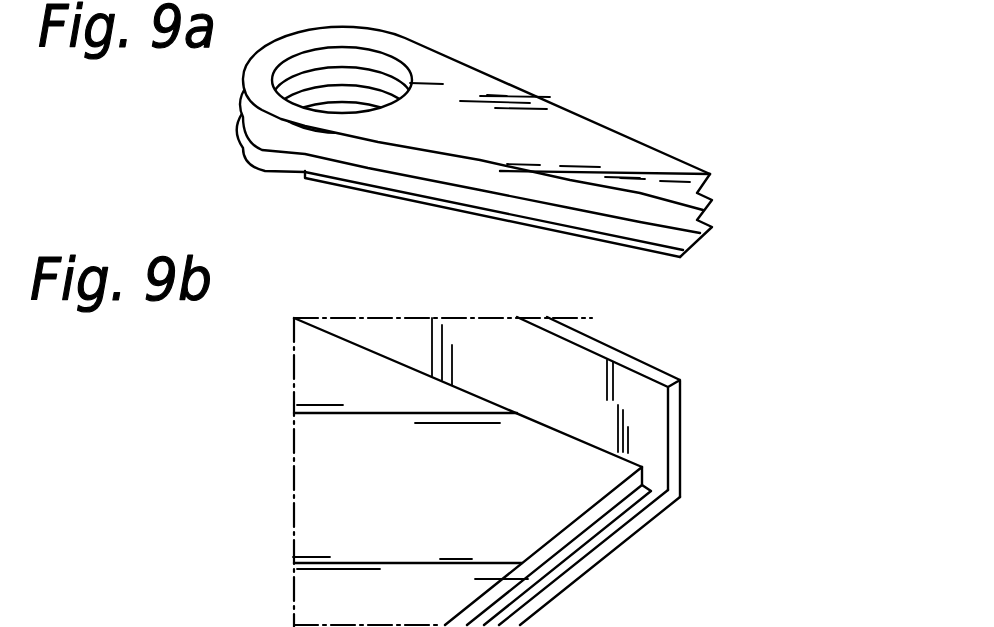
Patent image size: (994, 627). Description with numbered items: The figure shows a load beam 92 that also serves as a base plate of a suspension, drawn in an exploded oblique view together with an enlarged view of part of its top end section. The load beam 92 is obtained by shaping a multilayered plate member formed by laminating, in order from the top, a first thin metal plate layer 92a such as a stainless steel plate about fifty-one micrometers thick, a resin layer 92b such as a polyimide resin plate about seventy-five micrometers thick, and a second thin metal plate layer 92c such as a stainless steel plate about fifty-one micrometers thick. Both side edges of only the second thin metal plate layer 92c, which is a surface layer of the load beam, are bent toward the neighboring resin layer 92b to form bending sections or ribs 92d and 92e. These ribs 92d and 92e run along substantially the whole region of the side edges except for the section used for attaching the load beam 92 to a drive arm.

In FIG. 9A, the load beam 92 is at (544, 162).
In FIG. 9A, the first thin metal plate layer 92a is at (516, 141).
In FIG. 9B, the first thin metal plate layer 92a is at (567, 586).
In FIG. 9A, the resin layer 92b is at (710, 174).
In FIG. 9B, the resin layer 92b is at (557, 556).
In FIG. 9A, the second thin metal plate layer 92c is at (524, 201).
In FIG. 9B, the second thin metal plate layer 92c is at (618, 532).
In FIG. 9A, the rib 92d is at (700, 218).
In FIG. 9B, the rib 92d is at (641, 434).
In FIG. 9A, the rib 92e is at (640, 247).